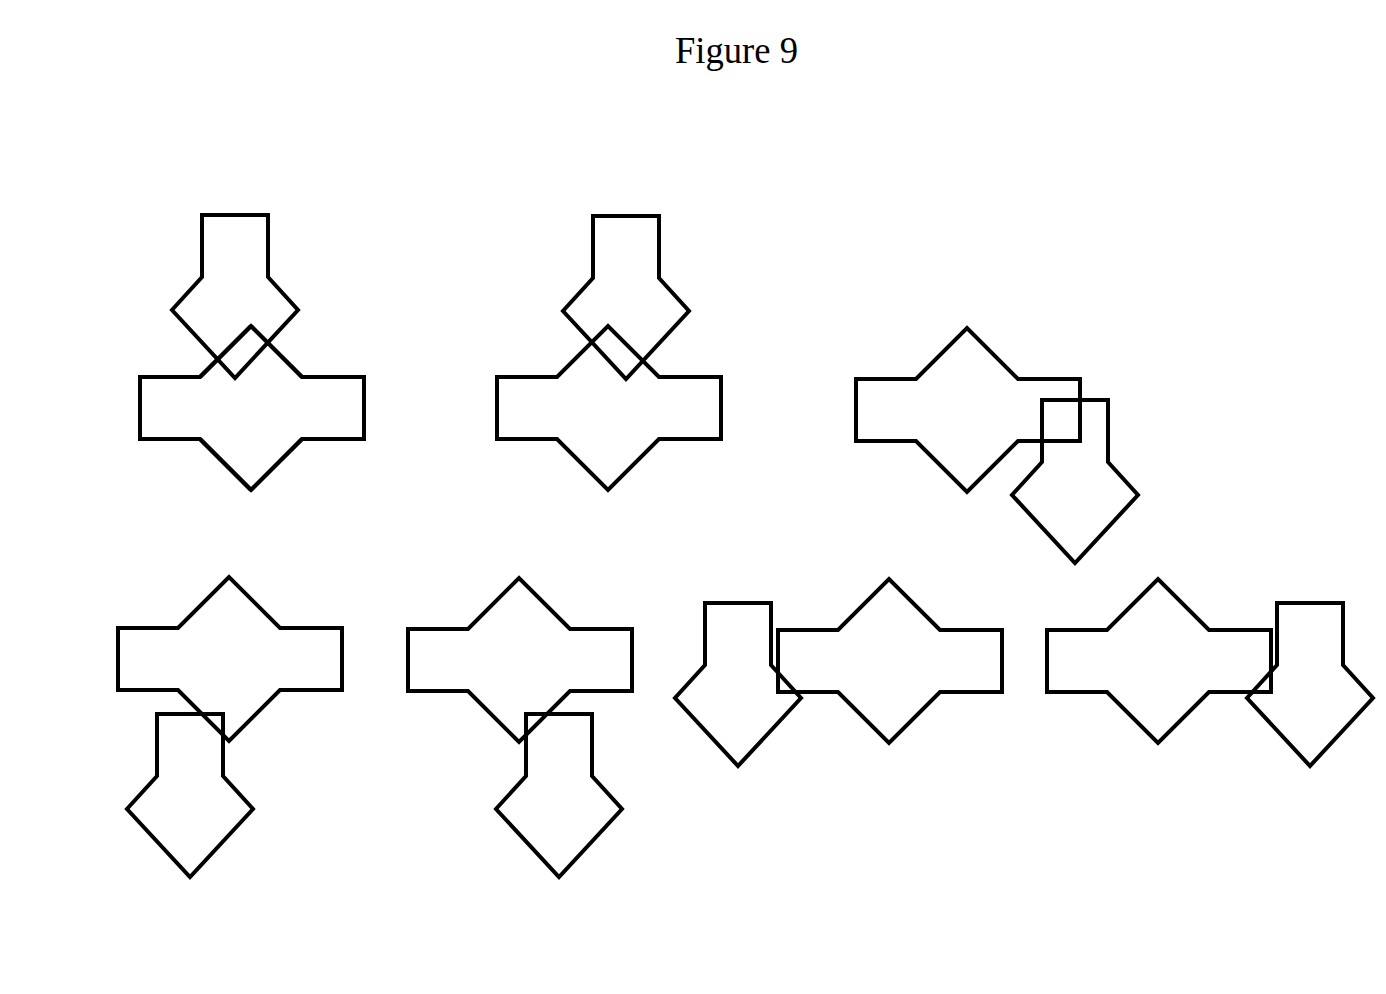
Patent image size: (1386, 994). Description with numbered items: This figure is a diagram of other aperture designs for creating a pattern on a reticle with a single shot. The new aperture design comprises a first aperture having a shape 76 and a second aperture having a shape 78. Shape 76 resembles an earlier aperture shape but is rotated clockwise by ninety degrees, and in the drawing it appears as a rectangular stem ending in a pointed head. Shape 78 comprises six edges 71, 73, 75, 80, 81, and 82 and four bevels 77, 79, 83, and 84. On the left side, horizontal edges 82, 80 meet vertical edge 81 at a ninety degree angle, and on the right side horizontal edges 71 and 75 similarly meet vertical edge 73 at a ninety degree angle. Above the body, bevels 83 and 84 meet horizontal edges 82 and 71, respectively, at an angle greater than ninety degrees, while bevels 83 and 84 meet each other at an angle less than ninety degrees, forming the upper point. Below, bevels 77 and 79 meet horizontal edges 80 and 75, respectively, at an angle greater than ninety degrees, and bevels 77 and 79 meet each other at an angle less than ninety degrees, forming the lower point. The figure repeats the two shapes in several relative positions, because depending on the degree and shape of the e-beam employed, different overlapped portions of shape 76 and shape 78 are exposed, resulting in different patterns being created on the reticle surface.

The horizontal edge 71 is at (345, 382).
The vertical edge 73 is at (367, 418).
The horizontal edge 75 is at (335, 443).
The shape 76 is at (253, 267).
The bevel 77 is at (278, 467).
The shape 78 is at (263, 427).
The bevel 79 is at (227, 470).
The horizontal edge 80 is at (163, 443).
The vertical edge 81 is at (138, 418).
The horizontal edge 82 is at (160, 372).
The bevel 83 is at (207, 362).
The bevel 84 is at (285, 357).